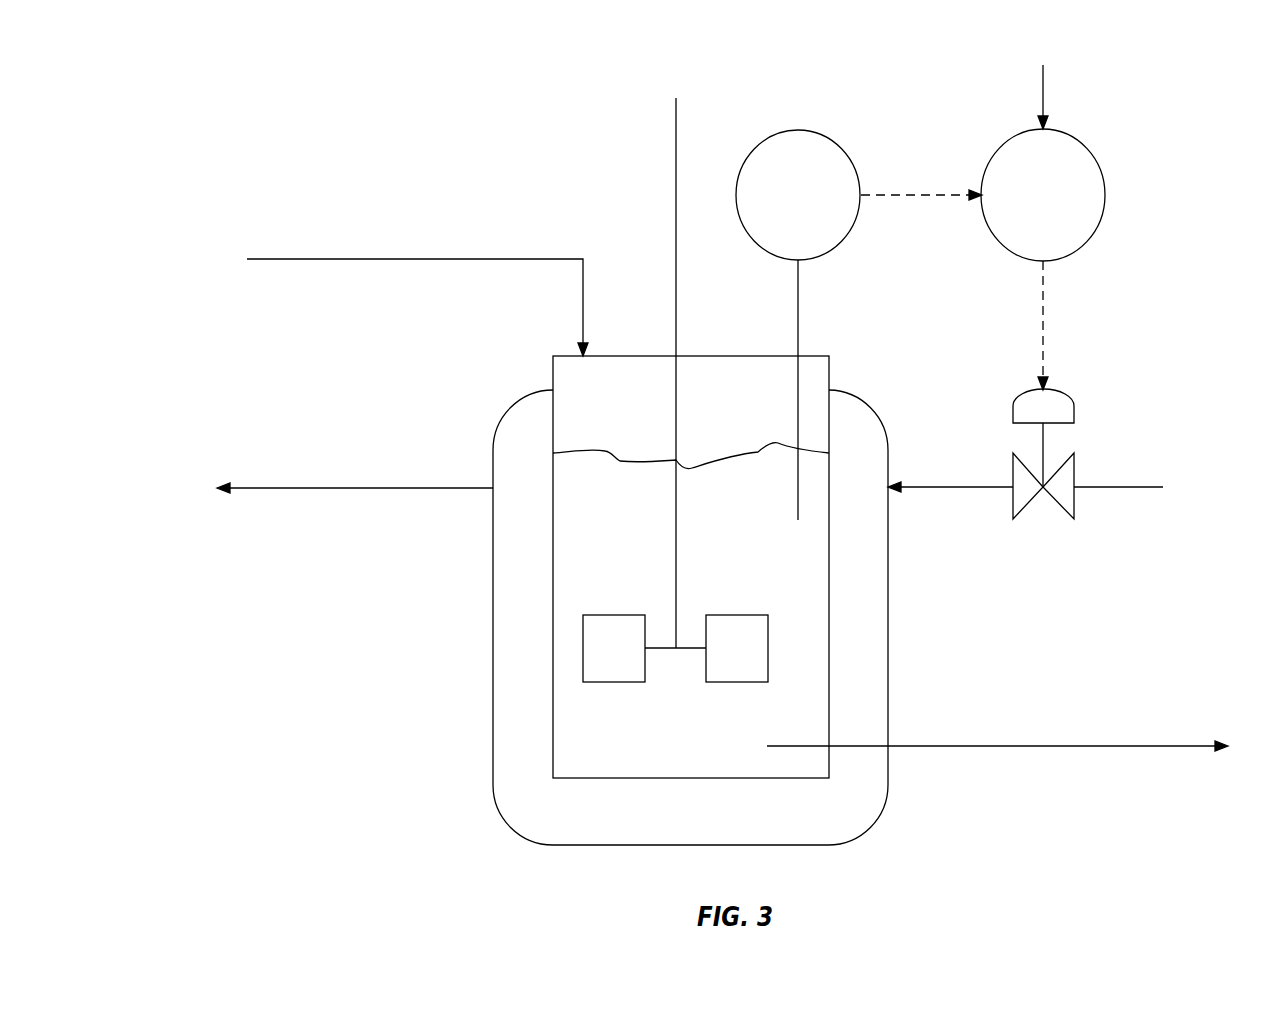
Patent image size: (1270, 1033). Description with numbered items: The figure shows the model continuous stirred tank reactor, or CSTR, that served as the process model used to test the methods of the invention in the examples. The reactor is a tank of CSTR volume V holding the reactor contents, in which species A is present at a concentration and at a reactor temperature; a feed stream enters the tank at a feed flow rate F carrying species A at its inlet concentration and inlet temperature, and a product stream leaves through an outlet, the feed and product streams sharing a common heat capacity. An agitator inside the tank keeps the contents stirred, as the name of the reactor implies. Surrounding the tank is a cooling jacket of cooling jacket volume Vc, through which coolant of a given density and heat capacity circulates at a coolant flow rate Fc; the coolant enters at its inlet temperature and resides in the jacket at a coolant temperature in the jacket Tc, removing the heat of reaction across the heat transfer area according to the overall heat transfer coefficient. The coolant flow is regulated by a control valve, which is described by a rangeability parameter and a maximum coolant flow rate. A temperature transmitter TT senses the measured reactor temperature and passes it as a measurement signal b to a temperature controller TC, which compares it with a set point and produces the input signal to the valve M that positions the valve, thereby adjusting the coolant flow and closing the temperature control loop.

The temperature transmitter TT is at (798, 325).
The temperature controller TC is at (1043, 153).
The measured temperature signal b is at (921, 171).
The input signal to the valve M is at (1055, 325).
The control valve is at (1042, 454).
The CSTR volume V is at (691, 567).
The cooling jacket volume Vc is at (707, 617).
The feed flow rate F is at (379, 266).
The coolant flow rate Fc is at (316, 448).
The coolant temperature in the jacket Tc is at (529, 549).
The element agitator is at (675, 390).
The product outlet stream outlet is at (1013, 719).